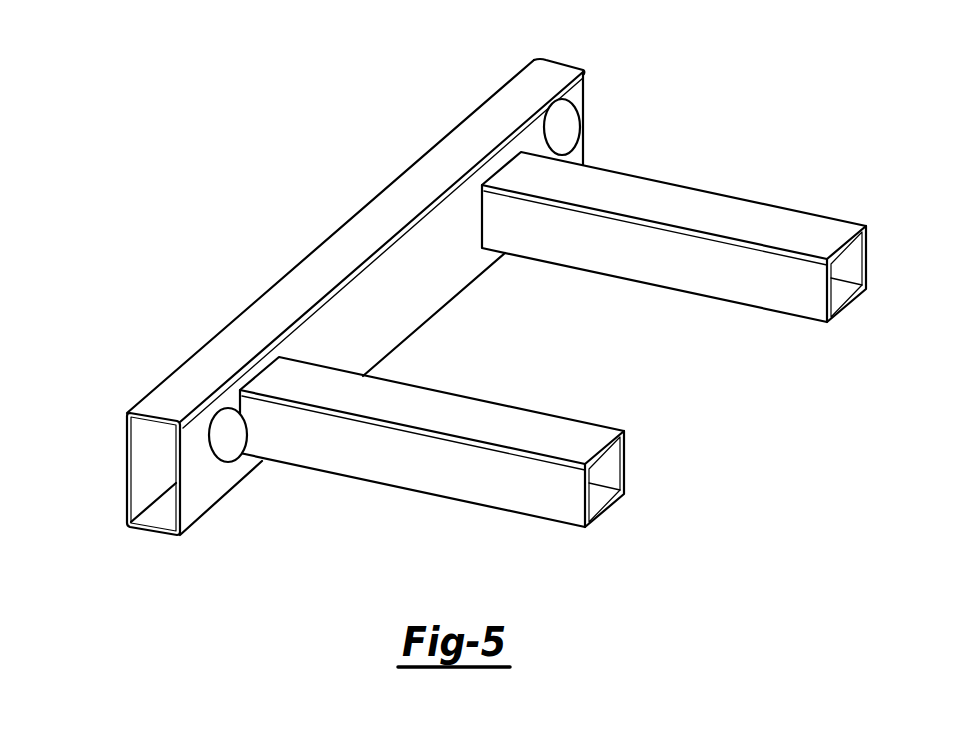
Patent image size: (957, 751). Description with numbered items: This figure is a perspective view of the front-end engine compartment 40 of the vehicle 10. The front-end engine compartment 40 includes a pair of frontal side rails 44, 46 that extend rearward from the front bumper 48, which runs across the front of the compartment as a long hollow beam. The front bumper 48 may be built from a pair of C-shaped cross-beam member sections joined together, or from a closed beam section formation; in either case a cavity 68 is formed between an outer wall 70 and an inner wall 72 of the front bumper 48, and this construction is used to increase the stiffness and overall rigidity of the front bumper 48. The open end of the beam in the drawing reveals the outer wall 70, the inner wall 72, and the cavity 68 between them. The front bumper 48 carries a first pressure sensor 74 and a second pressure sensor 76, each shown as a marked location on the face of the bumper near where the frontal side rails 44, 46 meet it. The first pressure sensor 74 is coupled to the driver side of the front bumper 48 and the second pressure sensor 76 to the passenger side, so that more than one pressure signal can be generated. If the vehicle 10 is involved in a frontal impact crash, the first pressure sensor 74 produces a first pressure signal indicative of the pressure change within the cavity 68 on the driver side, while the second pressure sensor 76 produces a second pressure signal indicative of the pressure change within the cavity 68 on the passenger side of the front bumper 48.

The vehicle 10 is at (731, 58).
The front-end engine compartment 40 is at (567, 62).
The frontal side rail 44 is at (572, 420).
The frontal side rail 46 is at (735, 192).
The front bumper 48 is at (418, 160).
The cavity 68 is at (171, 500).
The outer wall 70 is at (125, 438).
The inner wall 72 is at (147, 482).
The first pressure sensor 74 is at (232, 462).
The second pressure sensor 76 is at (576, 146).